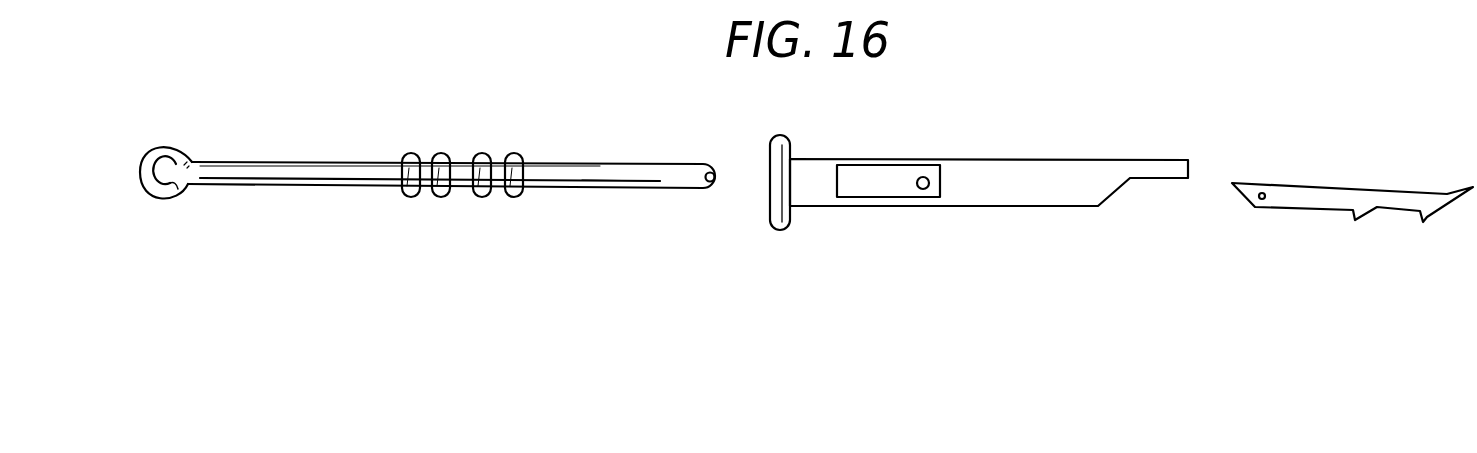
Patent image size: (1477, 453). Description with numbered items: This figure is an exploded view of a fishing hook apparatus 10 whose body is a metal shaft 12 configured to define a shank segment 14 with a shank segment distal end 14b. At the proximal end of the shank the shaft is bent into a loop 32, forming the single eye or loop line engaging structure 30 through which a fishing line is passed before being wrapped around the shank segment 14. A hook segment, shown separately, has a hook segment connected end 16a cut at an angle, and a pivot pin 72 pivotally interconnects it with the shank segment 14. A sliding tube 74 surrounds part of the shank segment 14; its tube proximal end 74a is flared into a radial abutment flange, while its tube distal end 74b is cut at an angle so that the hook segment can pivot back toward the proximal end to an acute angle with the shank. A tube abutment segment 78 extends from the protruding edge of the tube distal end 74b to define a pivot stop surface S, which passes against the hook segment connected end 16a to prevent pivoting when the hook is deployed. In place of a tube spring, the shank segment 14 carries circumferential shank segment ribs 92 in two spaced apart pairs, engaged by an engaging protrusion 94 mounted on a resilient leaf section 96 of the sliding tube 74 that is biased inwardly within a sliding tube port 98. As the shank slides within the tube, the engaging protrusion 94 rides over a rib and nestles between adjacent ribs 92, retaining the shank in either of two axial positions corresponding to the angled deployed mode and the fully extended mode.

The fishing hook apparatus 10 is at (1345, 100).
The metal shaft 12 is at (302, 167).
The shank segment 14 is at (608, 165).
The shank segment distal end 14b is at (682, 180).
The hook segment connected end 16a is at (1245, 200).
The single eye or loop line engaging structure 30 is at (200, 107).
The loop 32 is at (167, 188).
The pivot pin 72 is at (1273, 193).
The sliding tube 74 is at (1017, 172).
The tube proximal end 74a is at (773, 197).
The tube distal end 74b is at (1113, 180).
The tube abutment segment 78 is at (1190, 168).
The shank segment ribs 92 is at (415, 157).
The engaging protrusion 94 is at (923, 190).
The resilient leaf section 96 is at (865, 192).
The sliding tube port 98 is at (903, 165).
The pivot stop surface S is at (1157, 183).